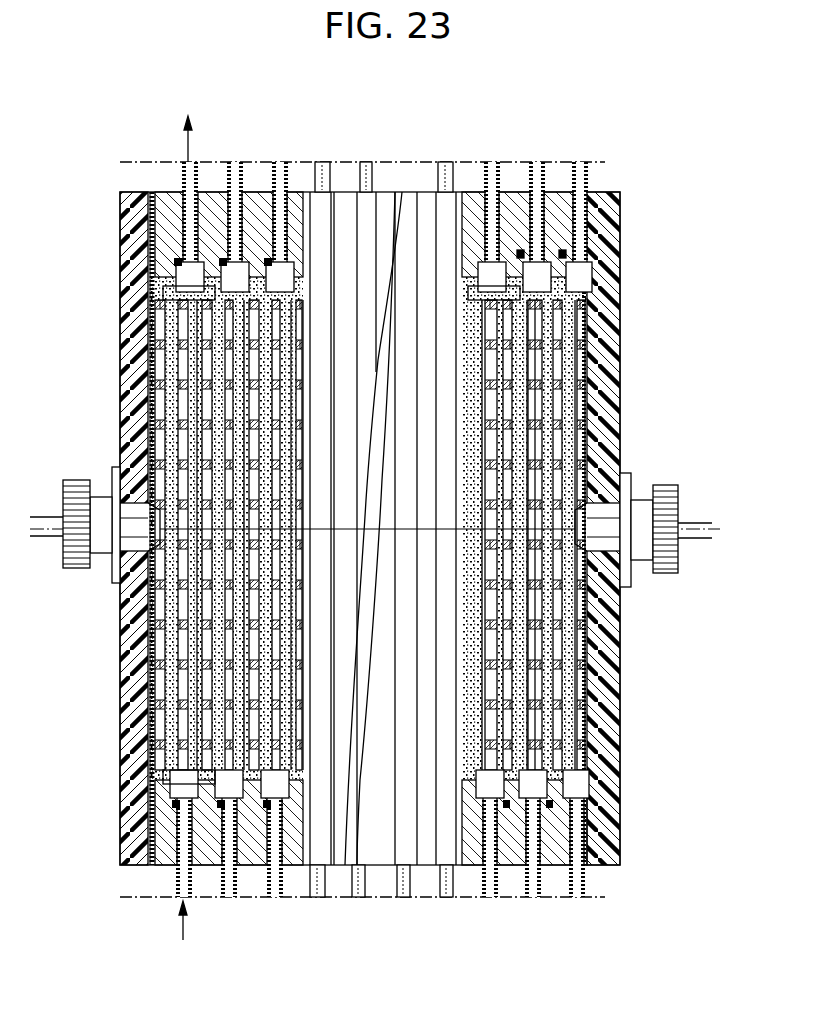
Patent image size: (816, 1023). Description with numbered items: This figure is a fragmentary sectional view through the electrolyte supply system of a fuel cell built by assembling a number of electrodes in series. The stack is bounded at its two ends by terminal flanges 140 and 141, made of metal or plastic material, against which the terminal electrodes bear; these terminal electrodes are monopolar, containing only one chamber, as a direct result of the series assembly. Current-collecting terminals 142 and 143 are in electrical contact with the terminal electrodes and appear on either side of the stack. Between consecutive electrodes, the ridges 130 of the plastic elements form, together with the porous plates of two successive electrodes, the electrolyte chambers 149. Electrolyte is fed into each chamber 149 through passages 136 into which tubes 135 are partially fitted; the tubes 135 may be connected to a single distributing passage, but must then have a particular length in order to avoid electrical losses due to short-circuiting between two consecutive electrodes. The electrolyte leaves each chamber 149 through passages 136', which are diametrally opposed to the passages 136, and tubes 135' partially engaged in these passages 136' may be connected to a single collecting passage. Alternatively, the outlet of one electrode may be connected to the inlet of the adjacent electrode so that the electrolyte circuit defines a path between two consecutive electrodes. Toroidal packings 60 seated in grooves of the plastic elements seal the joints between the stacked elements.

The packing 60 is at (527, 253).
The ridge 130 is at (180, 266).
The tube 135 is at (123, 860).
The tube 135' is at (126, 196).
The passage 136 is at (368, 538).
The passage 136' is at (136, 291).
The terminal flange 140 is at (134, 370).
The terminal flange 141 is at (606, 412).
The current-collecting terminal 142 is at (76, 568).
The current-collecting terminal 143 is at (662, 573).
The electrolyte chamber 149 is at (268, 690).